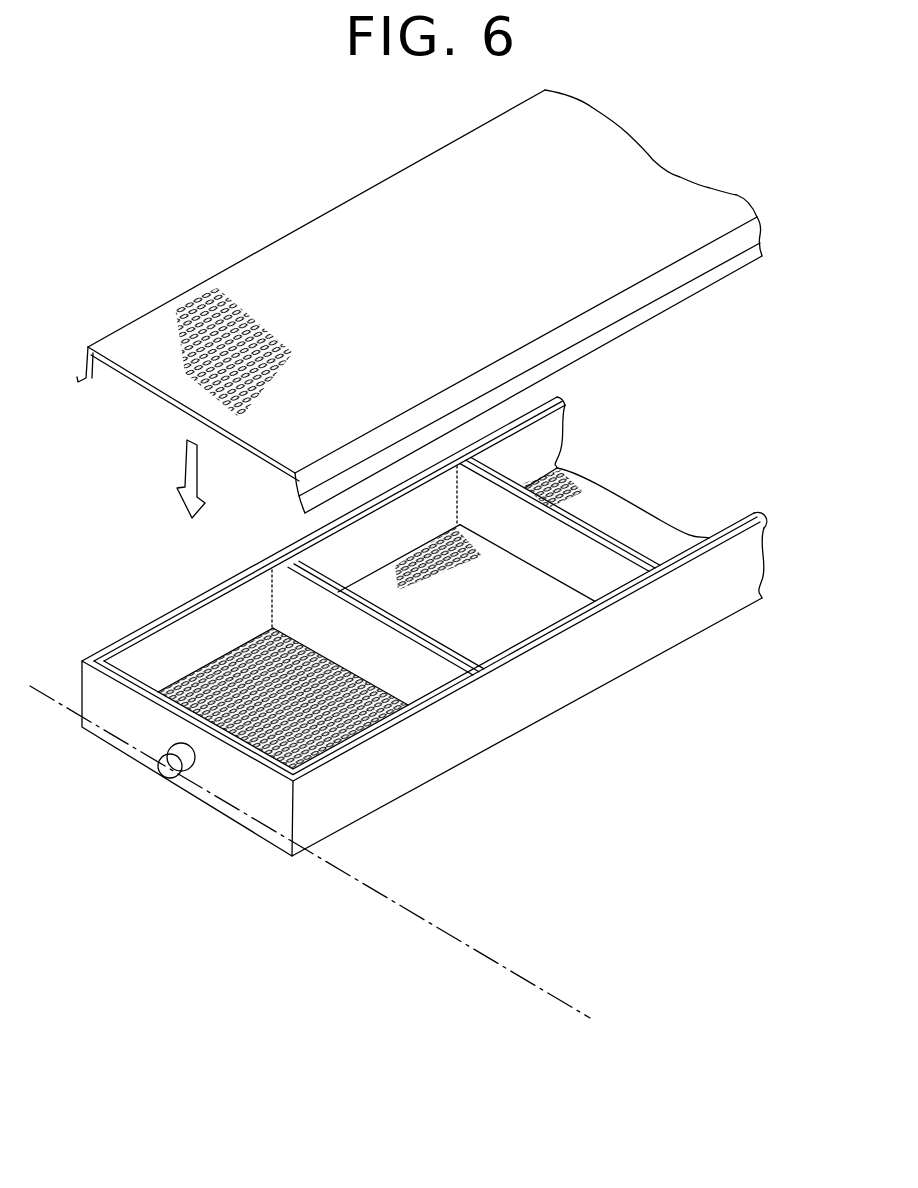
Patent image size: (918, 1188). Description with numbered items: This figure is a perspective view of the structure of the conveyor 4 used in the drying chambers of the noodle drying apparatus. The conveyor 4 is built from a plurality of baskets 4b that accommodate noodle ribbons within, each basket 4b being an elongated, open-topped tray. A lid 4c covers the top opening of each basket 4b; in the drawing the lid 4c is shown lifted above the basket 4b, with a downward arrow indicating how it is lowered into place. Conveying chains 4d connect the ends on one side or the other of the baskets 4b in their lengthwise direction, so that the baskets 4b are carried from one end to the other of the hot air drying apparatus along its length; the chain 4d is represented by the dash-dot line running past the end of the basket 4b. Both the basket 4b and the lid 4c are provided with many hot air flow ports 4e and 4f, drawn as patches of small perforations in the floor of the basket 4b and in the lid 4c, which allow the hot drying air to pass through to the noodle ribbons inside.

The conveyor 4 is at (398, 707).
The basket 4b is at (602, 665).
The lid 4c is at (419, 301).
The conveying chain 4d is at (443, 930).
The hot air flow port 4e is at (554, 481).
The hot air flow port 4f is at (233, 312).